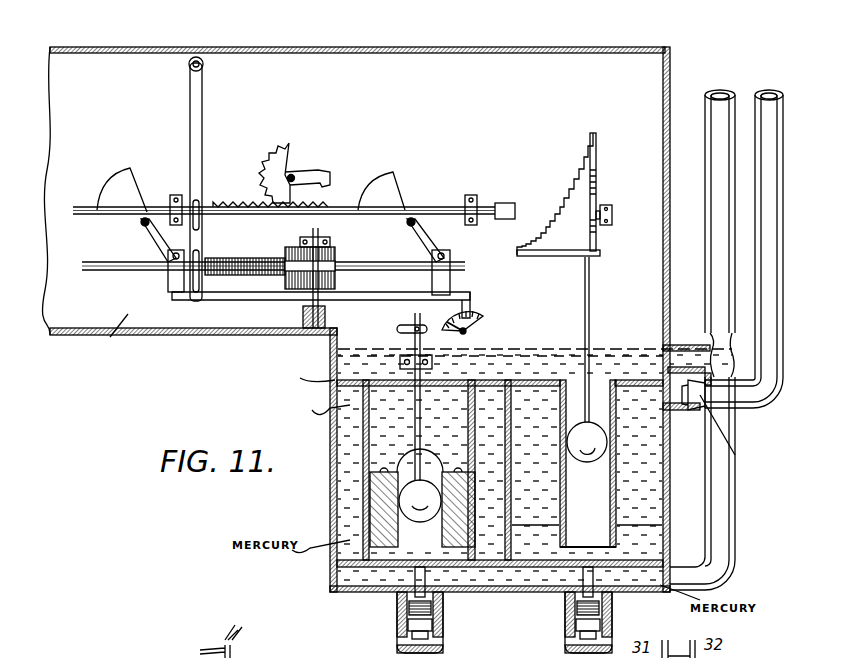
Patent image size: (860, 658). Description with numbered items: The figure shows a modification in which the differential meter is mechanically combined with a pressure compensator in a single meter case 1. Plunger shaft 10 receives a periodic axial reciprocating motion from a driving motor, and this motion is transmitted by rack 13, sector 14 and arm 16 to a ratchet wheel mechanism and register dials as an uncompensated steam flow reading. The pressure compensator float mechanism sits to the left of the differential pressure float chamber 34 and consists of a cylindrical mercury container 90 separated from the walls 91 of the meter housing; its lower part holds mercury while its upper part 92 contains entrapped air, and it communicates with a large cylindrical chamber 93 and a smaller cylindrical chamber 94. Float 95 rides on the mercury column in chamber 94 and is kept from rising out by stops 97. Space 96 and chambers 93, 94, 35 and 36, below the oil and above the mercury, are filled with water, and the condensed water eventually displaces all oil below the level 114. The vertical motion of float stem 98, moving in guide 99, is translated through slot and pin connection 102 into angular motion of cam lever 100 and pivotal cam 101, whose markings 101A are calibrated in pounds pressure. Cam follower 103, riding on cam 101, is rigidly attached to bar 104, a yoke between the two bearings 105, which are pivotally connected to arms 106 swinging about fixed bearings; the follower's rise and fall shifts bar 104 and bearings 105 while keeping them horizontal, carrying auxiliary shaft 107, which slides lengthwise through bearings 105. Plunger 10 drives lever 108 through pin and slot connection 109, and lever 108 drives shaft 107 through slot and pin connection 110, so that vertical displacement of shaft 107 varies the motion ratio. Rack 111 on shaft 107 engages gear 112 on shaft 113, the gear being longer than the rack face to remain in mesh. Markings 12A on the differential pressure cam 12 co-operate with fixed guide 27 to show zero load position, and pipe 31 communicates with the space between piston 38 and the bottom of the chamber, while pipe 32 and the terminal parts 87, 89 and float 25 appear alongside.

The casing 1 is at (470, 50).
The plunger shaft 10 is at (418, 207).
The differential pressure cam 12 is at (568, 200).
The markings 12A is at (597, 185).
The rack 13 is at (246, 212).
The sector 14 is at (270, 160).
The arm 16 is at (325, 172).
The float 25 is at (603, 447).
The fixed guide 27 is at (613, 215).
The pipe 31 is at (718, 93).
The water inlet pipe 32 is at (766, 93).
The differential pressure float chamber 34 is at (663, 487).
The chamber 35 is at (530, 390).
The chamber 36 is at (598, 405).
The piston 38 is at (640, 578).
The terminal connector 87 is at (272, 657).
The terminal lead 89 is at (200, 651).
The mercury container 90 is at (338, 495).
The walls of the meter housing 91 is at (333, 420).
The upper part of annular chamber 92 is at (348, 398).
The large cylindrical chamber 93 is at (378, 437).
The smaller cylindrical chamber 94 is at (404, 482).
The float 95 is at (405, 500).
The space 96 is at (352, 366).
The stops 97 is at (438, 458).
The float stem 98 is at (415, 406).
The guide 99 is at (415, 356).
The cam lever 100 is at (443, 328).
The pivotal cam 101 is at (475, 322).
The markings 101A is at (507, 318).
The slot and pin connection 102 is at (410, 326).
The cam follower 103 is at (472, 305).
The bar 104 is at (275, 300).
The bearings 105 is at (173, 280).
The arms 106 is at (158, 240).
The auxiliary shaft 107 is at (380, 264).
The lever 108 is at (192, 172).
The pin and slot connection 109 is at (205, 205).
The slot and pin connection 110 is at (203, 262).
The rack 111 is at (250, 260).
The gear 112 is at (334, 260).
The shaft 113 is at (320, 240).
The level 114 is at (484, 349).